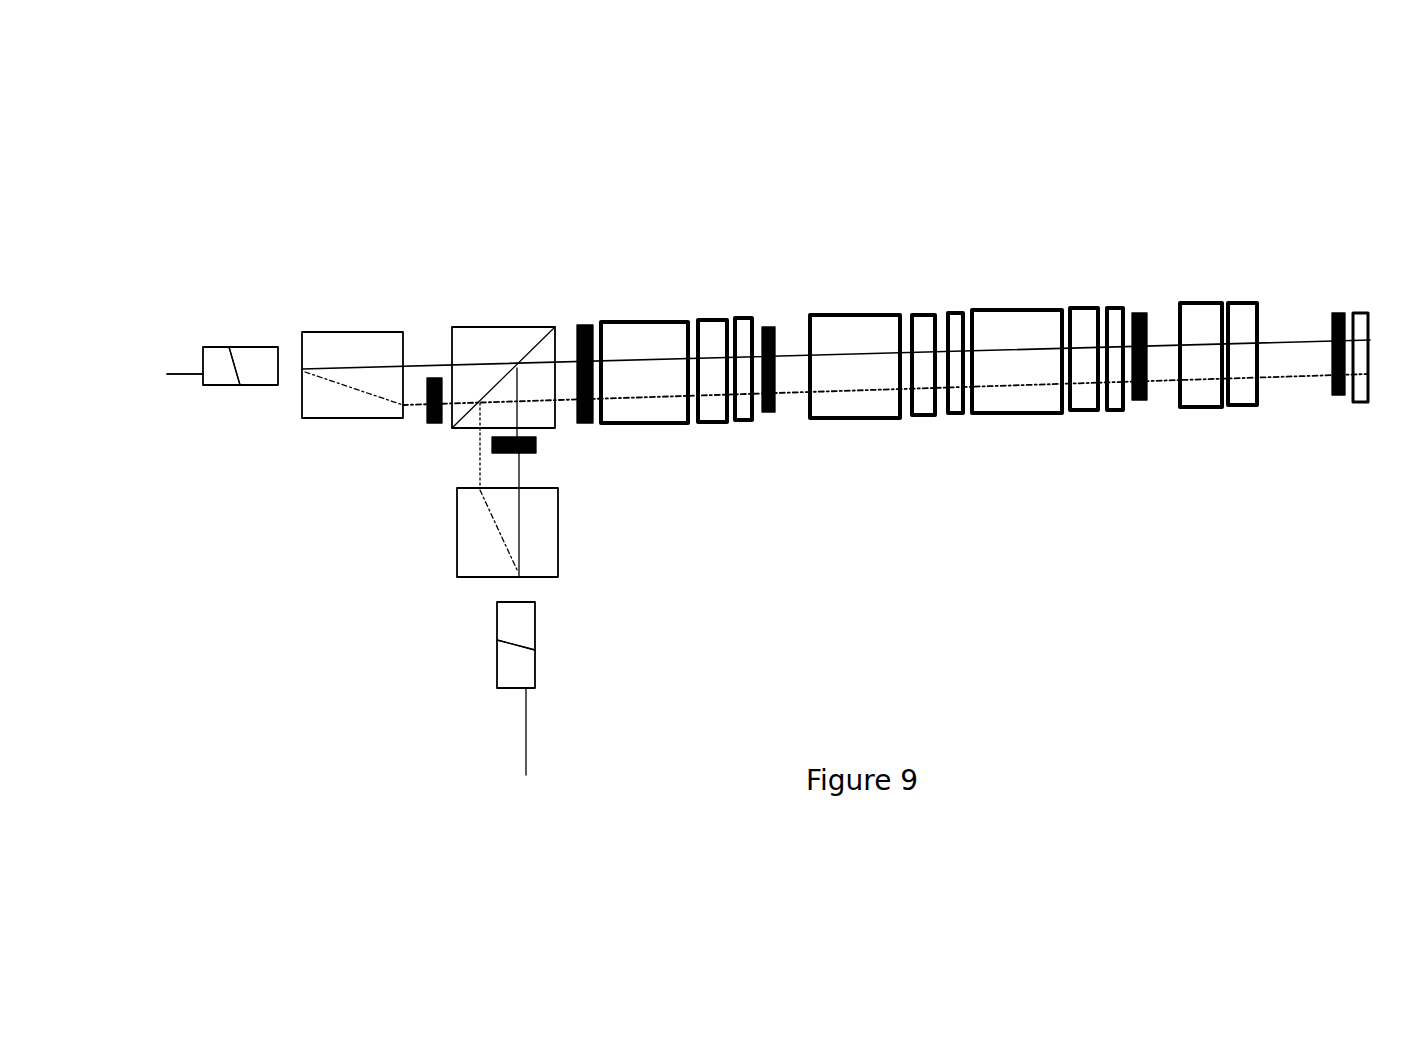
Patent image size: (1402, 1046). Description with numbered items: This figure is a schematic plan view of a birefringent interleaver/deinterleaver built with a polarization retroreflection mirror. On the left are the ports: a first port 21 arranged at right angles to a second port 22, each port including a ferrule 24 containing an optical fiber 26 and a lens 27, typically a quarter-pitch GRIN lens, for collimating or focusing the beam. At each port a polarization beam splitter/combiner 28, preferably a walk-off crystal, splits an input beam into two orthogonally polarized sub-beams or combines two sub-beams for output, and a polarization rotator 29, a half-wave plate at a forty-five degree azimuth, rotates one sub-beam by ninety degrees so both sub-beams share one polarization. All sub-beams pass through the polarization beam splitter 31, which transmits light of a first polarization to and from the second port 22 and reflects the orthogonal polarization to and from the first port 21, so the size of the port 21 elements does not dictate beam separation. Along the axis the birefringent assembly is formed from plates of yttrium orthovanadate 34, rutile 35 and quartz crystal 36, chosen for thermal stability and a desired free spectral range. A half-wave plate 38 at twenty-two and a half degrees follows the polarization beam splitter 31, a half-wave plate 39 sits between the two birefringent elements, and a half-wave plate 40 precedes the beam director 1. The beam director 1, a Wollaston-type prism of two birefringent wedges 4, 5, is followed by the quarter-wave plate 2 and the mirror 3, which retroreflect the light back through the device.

The beam director 1 is at (1228, 253).
The quarter-wave plate 2 is at (1330, 313).
The mirror 3 is at (1363, 402).
The birefringent wedge 4 is at (1195, 407).
The birefringent wedge 5 is at (1242, 405).
The first port 21 is at (563, 713).
The second port 22 is at (255, 422).
The ferrule 24 is at (216, 346).
The optical fiber 26 is at (178, 380).
The lens 27 is at (265, 347).
The polarization beam splitter/combiner 28 is at (457, 527).
The polarization rotator 29 is at (492, 443).
The polarization beam splitter 31 is at (490, 327).
The yttrium orthovanadate plate 34 is at (642, 423).
The rutile plate 35 is at (712, 320).
The quartz crystal plate 36 is at (750, 420).
The half-wave plate 38 is at (590, 325).
The half-wave plate 39 is at (770, 327).
The half-wave plate 40 is at (1145, 400).